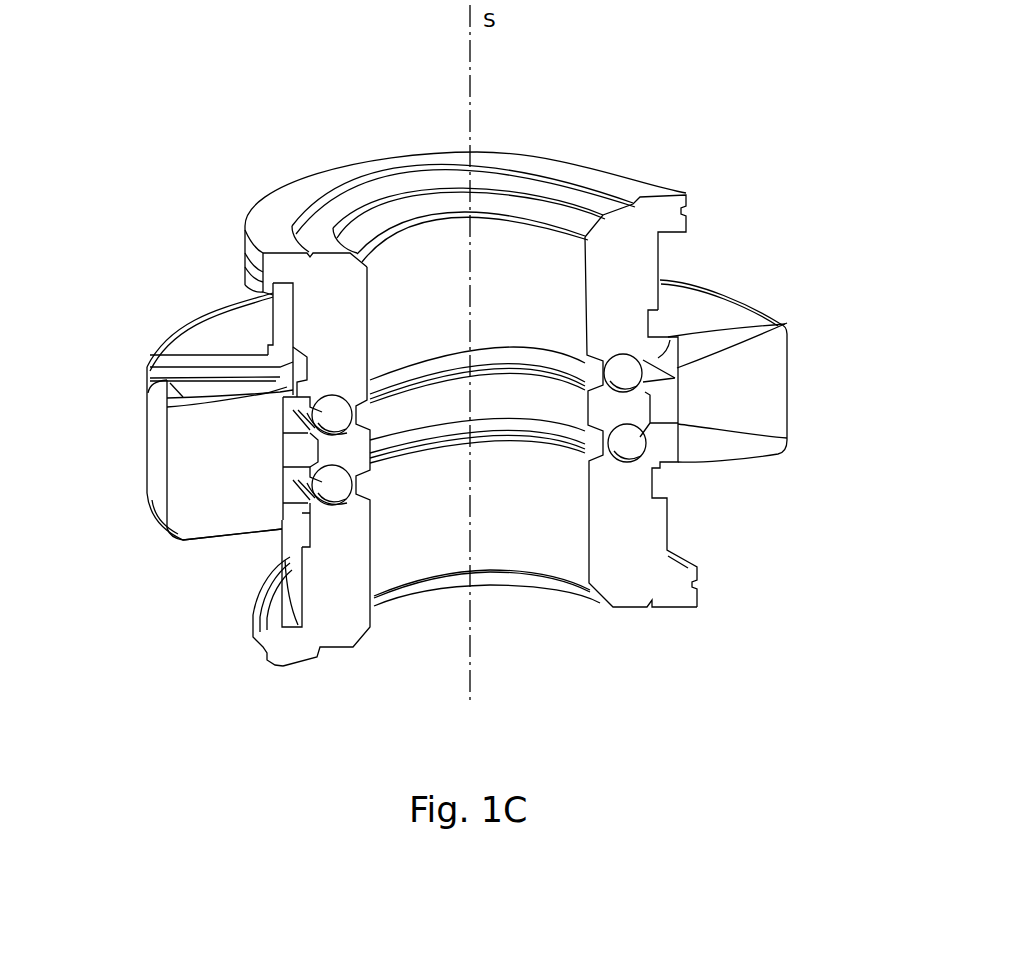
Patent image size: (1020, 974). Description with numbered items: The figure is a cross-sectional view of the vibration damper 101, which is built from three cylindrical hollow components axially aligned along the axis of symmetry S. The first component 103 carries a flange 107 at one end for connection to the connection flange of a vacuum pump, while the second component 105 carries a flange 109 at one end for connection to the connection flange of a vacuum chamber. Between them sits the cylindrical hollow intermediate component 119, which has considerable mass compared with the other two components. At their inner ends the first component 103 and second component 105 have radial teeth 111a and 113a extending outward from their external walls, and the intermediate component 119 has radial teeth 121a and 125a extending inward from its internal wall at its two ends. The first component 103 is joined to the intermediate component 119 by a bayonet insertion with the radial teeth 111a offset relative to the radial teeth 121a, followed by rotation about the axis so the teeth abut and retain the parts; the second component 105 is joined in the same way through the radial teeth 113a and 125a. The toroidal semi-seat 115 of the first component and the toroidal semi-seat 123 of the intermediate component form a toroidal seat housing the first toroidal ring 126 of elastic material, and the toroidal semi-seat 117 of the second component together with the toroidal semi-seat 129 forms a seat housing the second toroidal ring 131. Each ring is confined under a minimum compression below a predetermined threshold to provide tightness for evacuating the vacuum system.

The vibration damper 101 is at (716, 142).
The first cylindrical hollow component 103 is at (288, 562).
The second cylindrical hollow component 105 is at (293, 348).
The flange 107 is at (282, 667).
The flange 109 is at (283, 203).
The radial teeth 111a is at (787, 437).
The radial teeth 113a is at (787, 323).
The toroidal semi-seat 115 is at (282, 519).
The toroidal semi-seat 117 is at (150, 400).
The intermediate component 119 is at (757, 375).
The radial teeth 121a is at (678, 468).
The toroidal semi-seat 123 is at (312, 484).
The radial teeth 125a is at (670, 310).
The first toroidal ring 126 is at (611, 462).
The toroidal semi-seat 129 is at (312, 414).
The second toroidal ring 131 is at (620, 356).